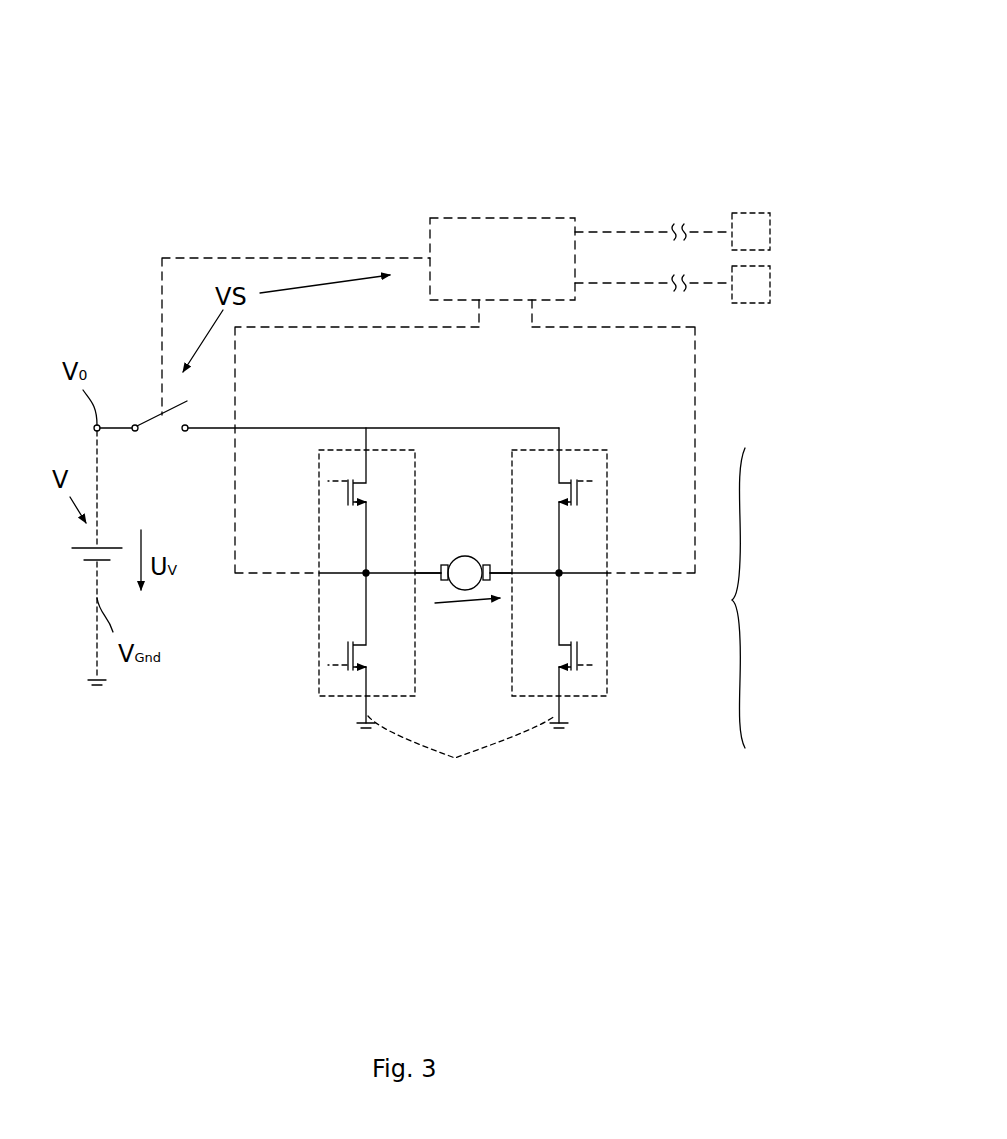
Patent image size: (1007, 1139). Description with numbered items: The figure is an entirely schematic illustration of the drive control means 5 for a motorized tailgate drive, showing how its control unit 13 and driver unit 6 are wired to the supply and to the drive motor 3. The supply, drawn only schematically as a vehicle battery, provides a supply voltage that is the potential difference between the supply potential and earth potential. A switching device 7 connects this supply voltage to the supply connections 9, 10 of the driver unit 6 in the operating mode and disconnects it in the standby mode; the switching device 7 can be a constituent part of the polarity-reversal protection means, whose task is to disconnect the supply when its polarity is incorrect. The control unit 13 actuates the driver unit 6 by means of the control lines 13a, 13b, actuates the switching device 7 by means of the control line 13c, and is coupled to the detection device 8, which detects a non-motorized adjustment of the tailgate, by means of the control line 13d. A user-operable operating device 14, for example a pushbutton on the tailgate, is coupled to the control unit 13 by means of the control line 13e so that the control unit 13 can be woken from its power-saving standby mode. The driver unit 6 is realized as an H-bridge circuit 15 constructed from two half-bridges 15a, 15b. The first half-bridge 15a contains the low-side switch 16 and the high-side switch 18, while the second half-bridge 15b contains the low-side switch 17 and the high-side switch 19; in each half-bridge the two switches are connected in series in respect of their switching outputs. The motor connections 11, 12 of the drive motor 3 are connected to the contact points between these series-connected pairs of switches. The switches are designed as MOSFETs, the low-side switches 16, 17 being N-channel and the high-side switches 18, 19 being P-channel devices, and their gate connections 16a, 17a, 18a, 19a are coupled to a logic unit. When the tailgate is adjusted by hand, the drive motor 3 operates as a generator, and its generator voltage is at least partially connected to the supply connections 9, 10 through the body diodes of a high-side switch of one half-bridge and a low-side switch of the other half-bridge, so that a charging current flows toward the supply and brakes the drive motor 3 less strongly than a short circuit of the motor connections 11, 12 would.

The drive motor 3 is at (455, 556).
The drive control means 5 is at (699, 103).
The driver unit 6 is at (752, 598).
The switching device 7 is at (137, 392).
The detection device 8 is at (755, 218).
The supply connection 9 is at (435, 428).
The supply connection 10 is at (462, 758).
The motor connection 11 is at (427, 577).
The motor connection 12 is at (500, 565).
The control unit 13 is at (487, 240).
The control line 13a is at (670, 327).
The control line 13b is at (340, 327).
The control line 13c is at (242, 258).
The control line 13d is at (611, 232).
The control line 13e is at (621, 283).
The operating device 14 is at (762, 278).
The H-bridge circuit 15 is at (451, 669).
The half-bridge 15a is at (318, 680).
The half-bridge 15b is at (609, 680).
The low-side switch 16 is at (315, 674).
The gate connection 16a is at (340, 665).
The low-side switch 17 is at (613, 674).
The gate connection 17a is at (588, 665).
The high-side switch 18 is at (317, 500).
The gate connection 18a is at (340, 481).
The high-side switch 19 is at (616, 500).
The gate connection 19a is at (588, 481).